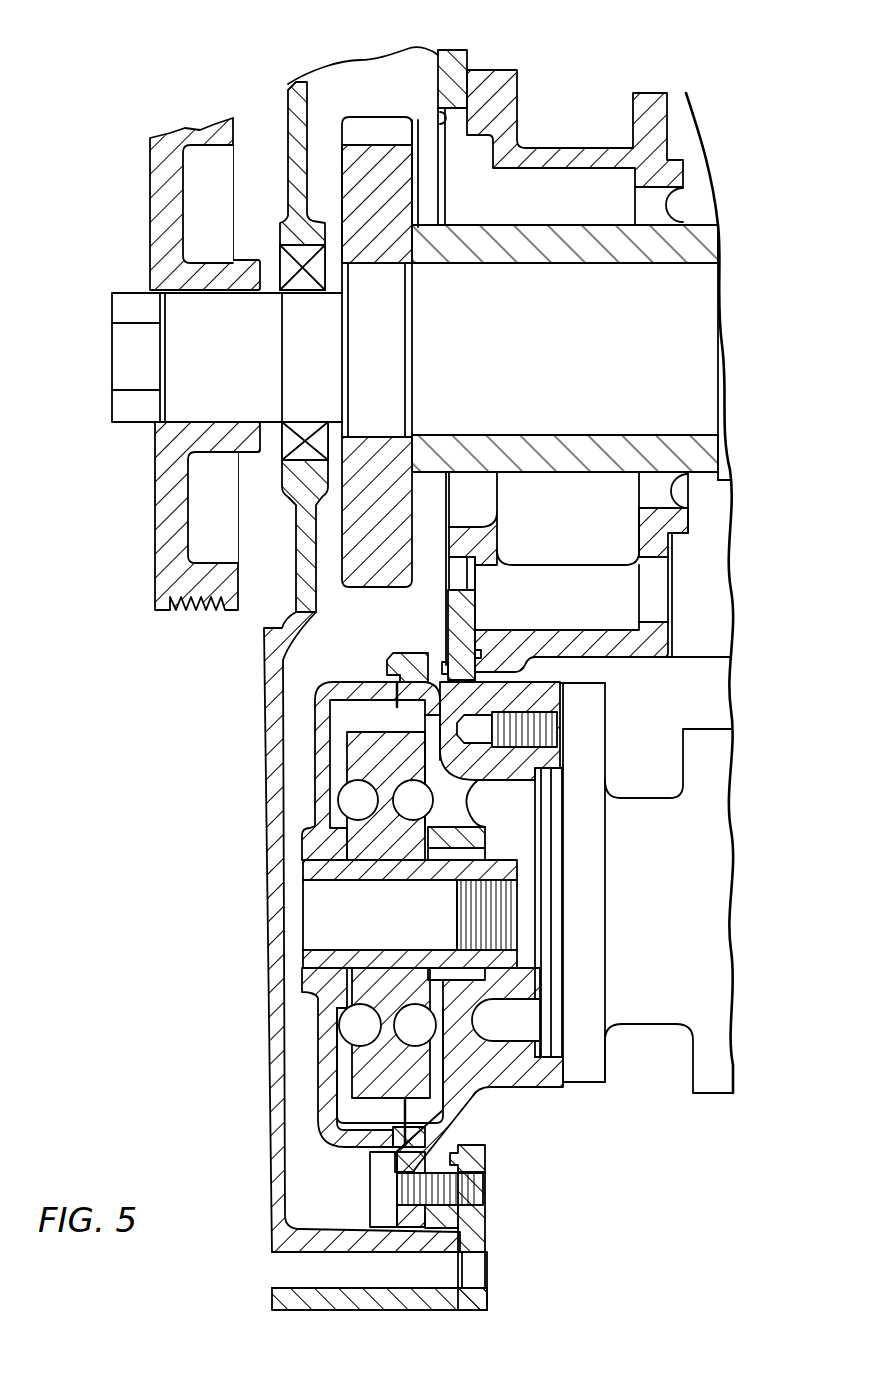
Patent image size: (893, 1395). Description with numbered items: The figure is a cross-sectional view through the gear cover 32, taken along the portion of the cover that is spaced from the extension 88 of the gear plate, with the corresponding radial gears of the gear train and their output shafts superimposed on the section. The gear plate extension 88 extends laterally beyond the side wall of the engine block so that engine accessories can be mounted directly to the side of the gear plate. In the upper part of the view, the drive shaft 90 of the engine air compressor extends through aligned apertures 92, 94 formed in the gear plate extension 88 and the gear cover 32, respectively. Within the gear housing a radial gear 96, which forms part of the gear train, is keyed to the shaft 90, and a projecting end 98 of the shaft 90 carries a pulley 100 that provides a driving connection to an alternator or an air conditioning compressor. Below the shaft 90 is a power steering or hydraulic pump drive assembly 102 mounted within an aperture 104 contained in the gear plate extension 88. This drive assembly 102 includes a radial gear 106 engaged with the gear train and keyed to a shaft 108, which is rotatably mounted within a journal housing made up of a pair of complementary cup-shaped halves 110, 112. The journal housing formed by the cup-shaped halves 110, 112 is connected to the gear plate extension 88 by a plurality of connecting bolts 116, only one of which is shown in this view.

The gear cover 32 is at (266, 722).
The gear plate extension 88 is at (438, 52).
The drive shaft 90 is at (700, 270).
The aperture 92 is at (440, 118).
The aperture 94 is at (283, 247).
The radial gear 96 is at (346, 158).
The projecting end 98 is at (180, 307).
The pulley 100 is at (167, 497).
The power steering or hydraulic pump drive assembly 102 is at (511, 1096).
The aperture 104 is at (487, 1140).
The radial gear 106 is at (383, 1010).
The shaft 108 is at (310, 912).
The cup-shaped half 110 is at (317, 997).
The cup-shaped half 112 is at (474, 1019).
The connecting bolt 116 is at (482, 1200).